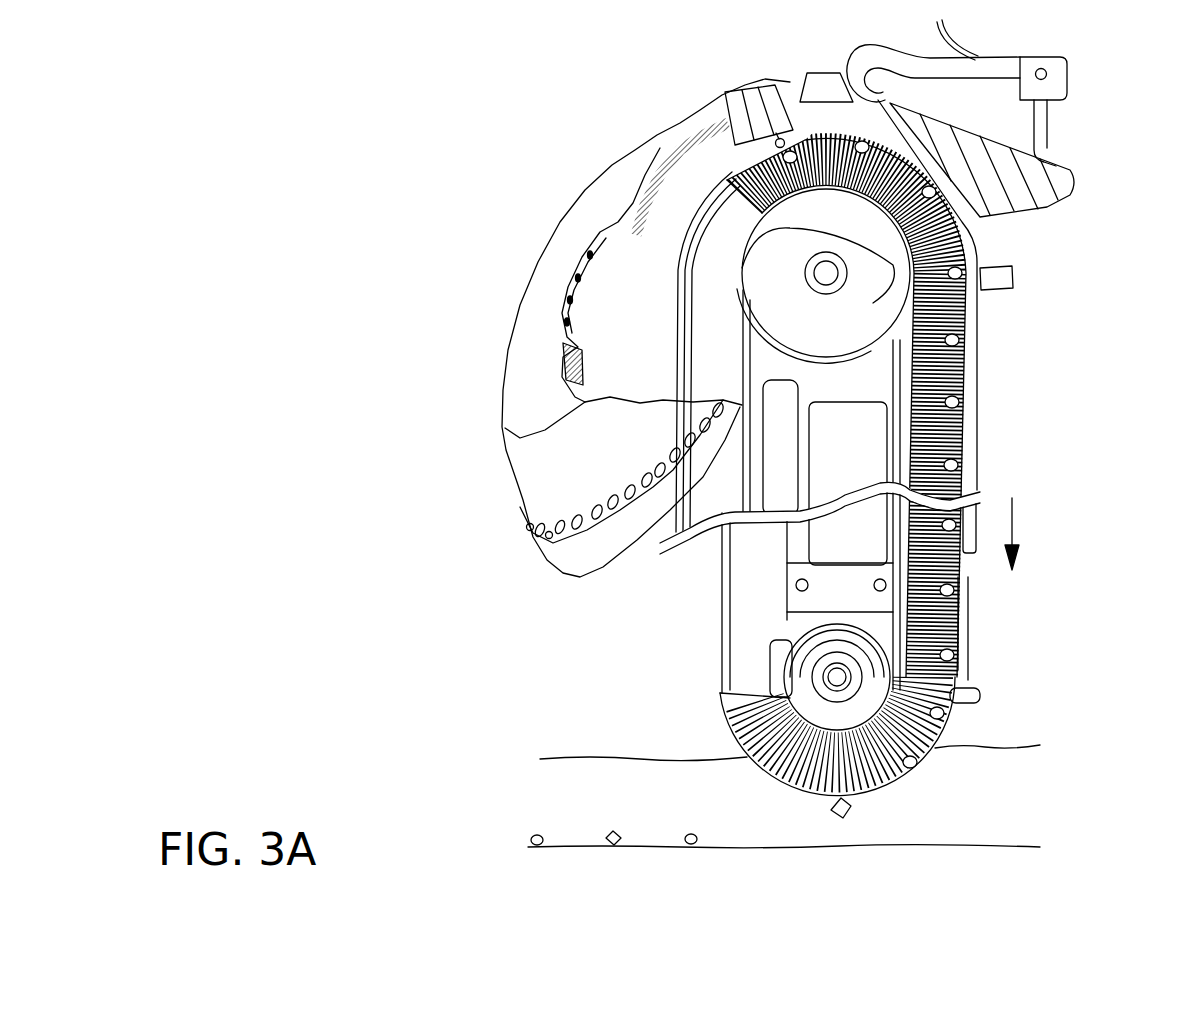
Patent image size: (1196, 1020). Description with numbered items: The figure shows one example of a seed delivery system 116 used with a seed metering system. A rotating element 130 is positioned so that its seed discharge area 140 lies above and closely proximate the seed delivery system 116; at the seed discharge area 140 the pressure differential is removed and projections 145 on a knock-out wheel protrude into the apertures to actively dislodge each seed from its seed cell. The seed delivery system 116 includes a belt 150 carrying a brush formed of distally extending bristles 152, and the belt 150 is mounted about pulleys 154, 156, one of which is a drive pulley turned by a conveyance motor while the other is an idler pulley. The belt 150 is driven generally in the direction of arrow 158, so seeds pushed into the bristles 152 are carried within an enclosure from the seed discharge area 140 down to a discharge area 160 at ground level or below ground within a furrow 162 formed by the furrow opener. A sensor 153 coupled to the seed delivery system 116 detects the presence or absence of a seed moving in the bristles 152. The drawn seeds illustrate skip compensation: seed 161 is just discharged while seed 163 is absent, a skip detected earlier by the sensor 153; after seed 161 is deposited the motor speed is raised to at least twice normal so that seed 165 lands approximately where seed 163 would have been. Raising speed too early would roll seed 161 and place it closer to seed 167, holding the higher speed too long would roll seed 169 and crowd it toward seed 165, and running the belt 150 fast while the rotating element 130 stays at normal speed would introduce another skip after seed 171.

The seed delivery system 116 is at (978, 466).
The rotating element 130 is at (548, 192).
The seed discharge area 140 is at (799, 37).
The projections 145 is at (763, 92).
The belt 150 is at (900, 400).
The bristles 152 is at (968, 318).
The sensor 153 is at (1013, 277).
The pulley 154 is at (890, 263).
The pulley 156 is at (853, 716).
The arrow 158 is at (1012, 526).
The discharge area 160 is at (880, 778).
The seed 161 is at (843, 818).
The furrow 162 is at (1048, 819).
The seed 163 is at (917, 770).
The seed 165 is at (944, 715).
The seed 167 is at (692, 844).
The seed 169 is at (962, 648).
The seed 171 is at (776, 143).